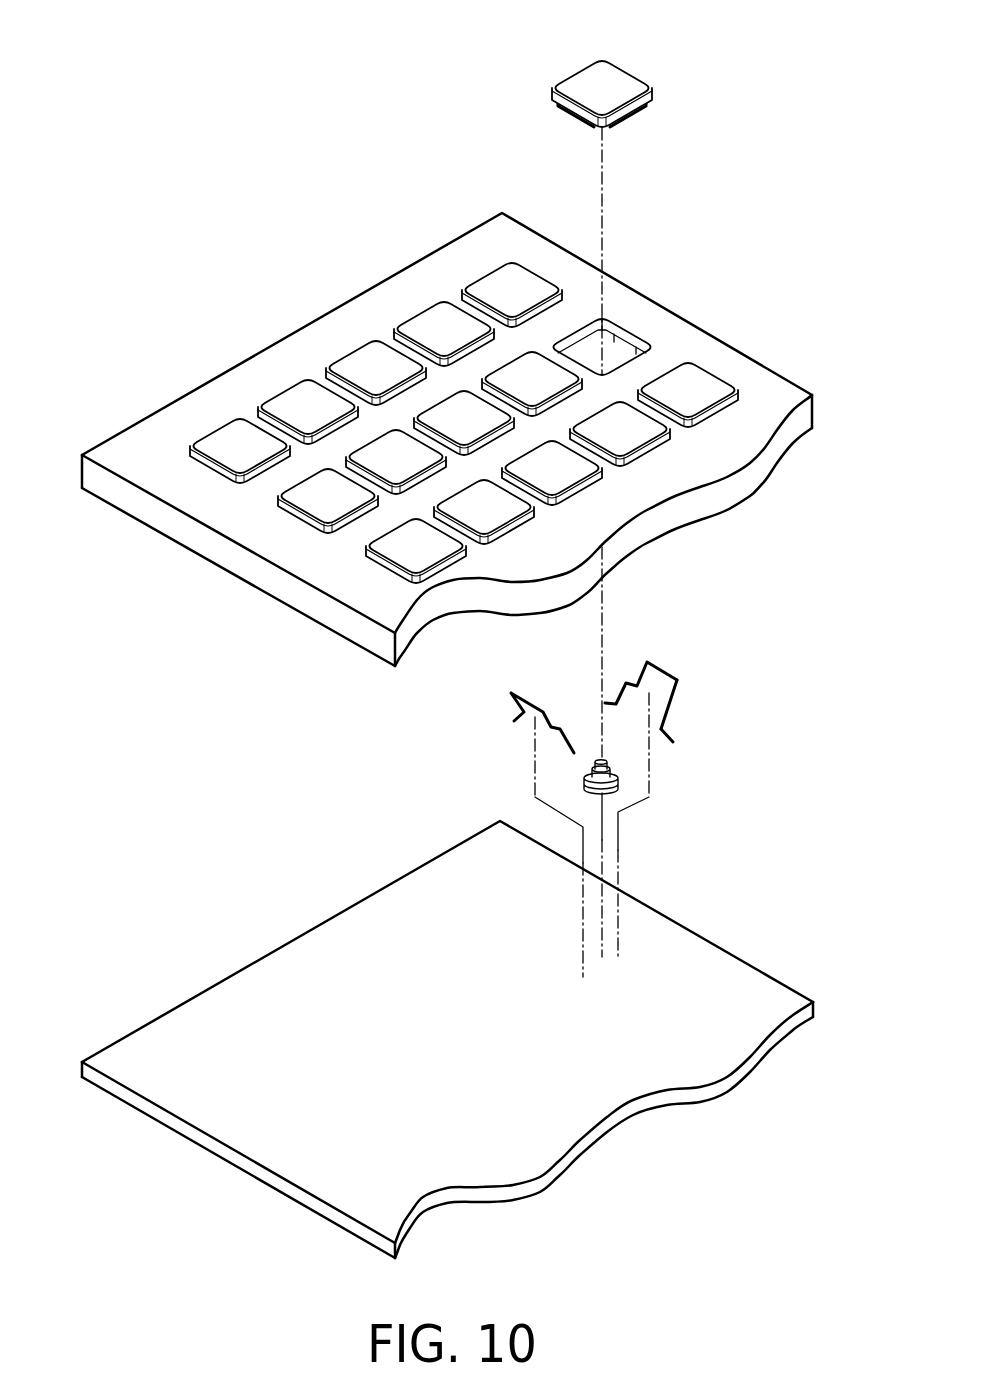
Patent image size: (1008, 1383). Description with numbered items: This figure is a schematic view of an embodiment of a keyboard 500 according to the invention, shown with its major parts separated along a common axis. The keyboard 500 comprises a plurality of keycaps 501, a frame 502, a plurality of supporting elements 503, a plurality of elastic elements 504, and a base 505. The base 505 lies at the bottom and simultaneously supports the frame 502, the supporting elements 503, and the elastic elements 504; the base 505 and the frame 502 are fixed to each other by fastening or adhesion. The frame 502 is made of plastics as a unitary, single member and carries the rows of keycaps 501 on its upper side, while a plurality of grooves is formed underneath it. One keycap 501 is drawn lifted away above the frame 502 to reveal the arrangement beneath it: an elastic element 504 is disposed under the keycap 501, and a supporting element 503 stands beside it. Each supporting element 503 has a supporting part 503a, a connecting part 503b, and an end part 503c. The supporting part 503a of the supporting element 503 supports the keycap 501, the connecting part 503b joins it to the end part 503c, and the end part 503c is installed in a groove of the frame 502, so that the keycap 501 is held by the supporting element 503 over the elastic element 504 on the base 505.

The keyboard 500 is at (132, 81).
The keycap 501 is at (617, 75).
The frame 502 is at (773, 390).
The supporting element 503 is at (694, 705).
The supporting part 503a is at (660, 667).
The connecting part 503b is at (677, 697).
The end part 503c is at (732, 761).
The elastic element 504 is at (590, 760).
The base 505 is at (725, 998).